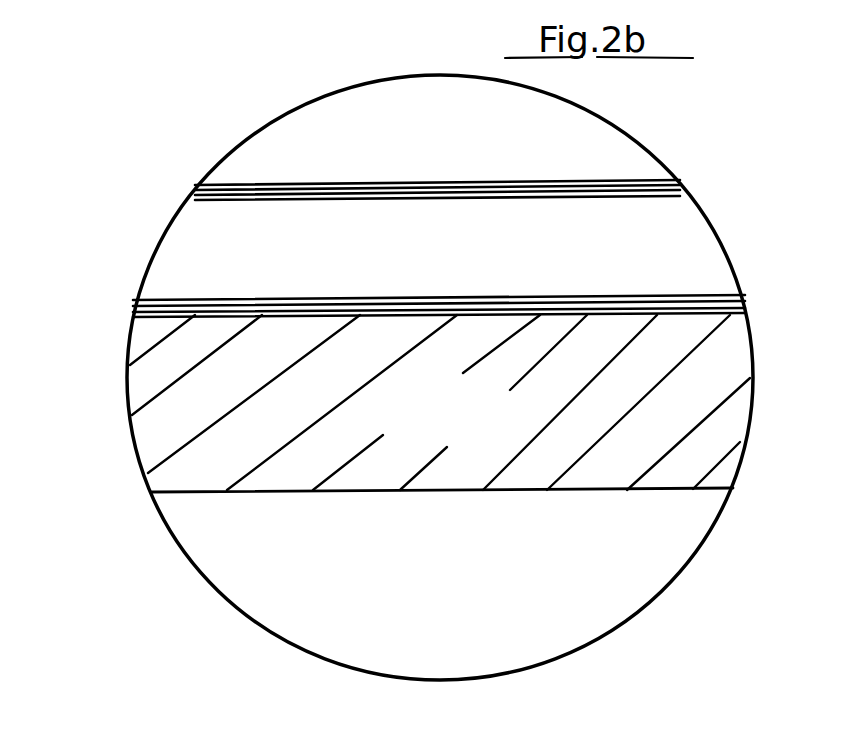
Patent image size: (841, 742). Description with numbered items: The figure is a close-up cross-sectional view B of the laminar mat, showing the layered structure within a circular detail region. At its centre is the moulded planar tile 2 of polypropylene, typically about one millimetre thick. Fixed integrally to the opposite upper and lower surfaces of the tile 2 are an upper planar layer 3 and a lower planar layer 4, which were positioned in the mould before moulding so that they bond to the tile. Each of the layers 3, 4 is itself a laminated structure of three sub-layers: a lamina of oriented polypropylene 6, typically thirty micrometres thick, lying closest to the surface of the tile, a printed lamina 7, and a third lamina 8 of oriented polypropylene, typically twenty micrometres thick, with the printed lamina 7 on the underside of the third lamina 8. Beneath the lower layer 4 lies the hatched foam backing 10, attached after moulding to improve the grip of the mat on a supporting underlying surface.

The close-up cross-sectional view B is at (186, 557).
The moulded planar tile 2 is at (447, 262).
The upper planar layer 3 is at (333, 184).
The lower planar layer 4 is at (746, 297).
The lamina of oriented polypropylene 6 is at (192, 196).
The printed lamina 7 is at (195, 191).
The third lamina of oriented polypropylene 8 is at (196, 187).
The foam backing 10 is at (468, 414).